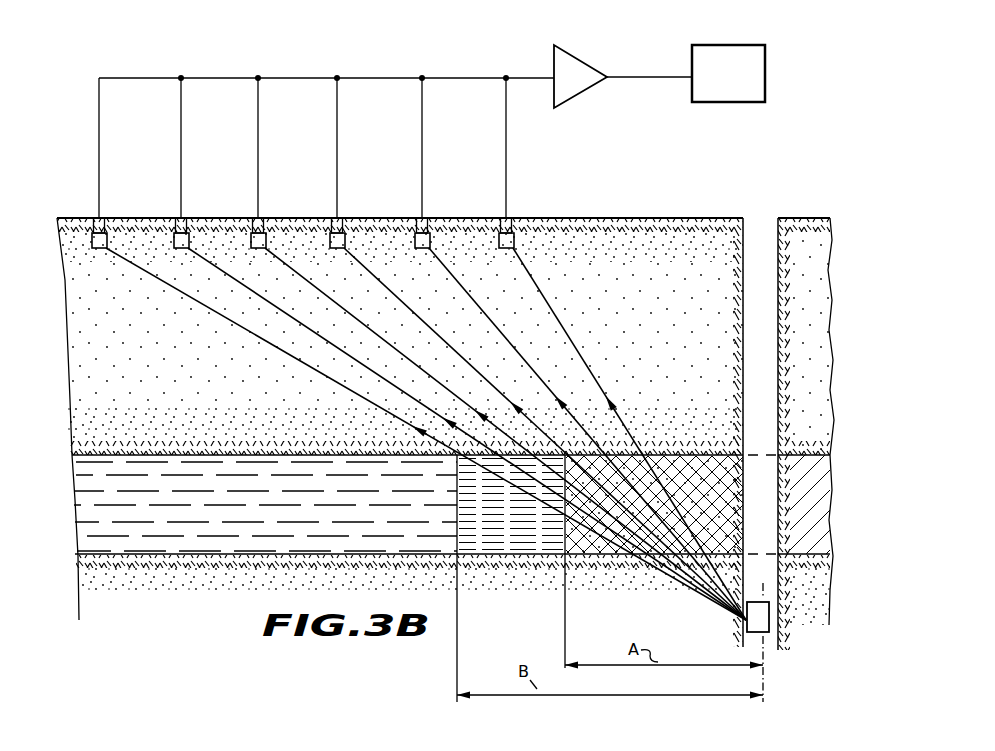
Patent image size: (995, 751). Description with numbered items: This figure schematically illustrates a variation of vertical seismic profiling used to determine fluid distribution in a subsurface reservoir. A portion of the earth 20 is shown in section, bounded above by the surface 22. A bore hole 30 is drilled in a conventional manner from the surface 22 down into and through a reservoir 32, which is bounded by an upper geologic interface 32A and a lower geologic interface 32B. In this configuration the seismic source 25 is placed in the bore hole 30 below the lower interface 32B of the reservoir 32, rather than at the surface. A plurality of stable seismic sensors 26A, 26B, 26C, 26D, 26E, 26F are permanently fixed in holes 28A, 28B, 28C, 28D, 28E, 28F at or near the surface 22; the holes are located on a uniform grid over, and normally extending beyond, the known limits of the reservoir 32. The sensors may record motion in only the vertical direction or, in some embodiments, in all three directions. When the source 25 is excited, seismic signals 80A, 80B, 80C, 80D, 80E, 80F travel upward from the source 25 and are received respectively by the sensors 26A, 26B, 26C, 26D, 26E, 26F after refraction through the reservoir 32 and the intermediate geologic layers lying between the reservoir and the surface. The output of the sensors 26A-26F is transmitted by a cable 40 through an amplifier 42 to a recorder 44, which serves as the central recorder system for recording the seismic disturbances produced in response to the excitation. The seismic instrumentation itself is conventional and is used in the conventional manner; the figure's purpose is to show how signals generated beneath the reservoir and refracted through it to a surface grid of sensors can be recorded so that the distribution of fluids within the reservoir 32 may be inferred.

The earth 20 is at (125, 353).
The surface 22 is at (60, 214).
The seismic source 25 is at (770, 617).
The seismic sensor 26A is at (492, 221).
The seismic sensor 26B is at (411, 221).
The seismic sensor 26C is at (323, 221).
The seismic sensor 26D is at (242, 221).
The seismic sensor 26E is at (164, 221).
The seismic sensor 26F is at (79, 221).
The hole 28A is at (515, 251).
The hole 28B is at (429, 251).
The hole 28C is at (343, 251).
The hole 28D is at (265, 251).
The hole 28E is at (186, 251).
The hole 28F is at (98, 251).
The bore hole 30 is at (780, 338).
The reservoir 32 is at (117, 492).
The geologic interface 32A is at (100, 444).
The geologic interface 32B is at (145, 560).
The cable 40 is at (324, 77).
The amplifier 42 is at (583, 93).
The recorder 44 is at (766, 102).
The signal 80A is at (584, 367).
The signal 80B is at (529, 369).
The signal 80C is at (449, 351).
The signal 80D is at (388, 328).
The signal 80E is at (295, 324).
The signal 80F is at (313, 373).